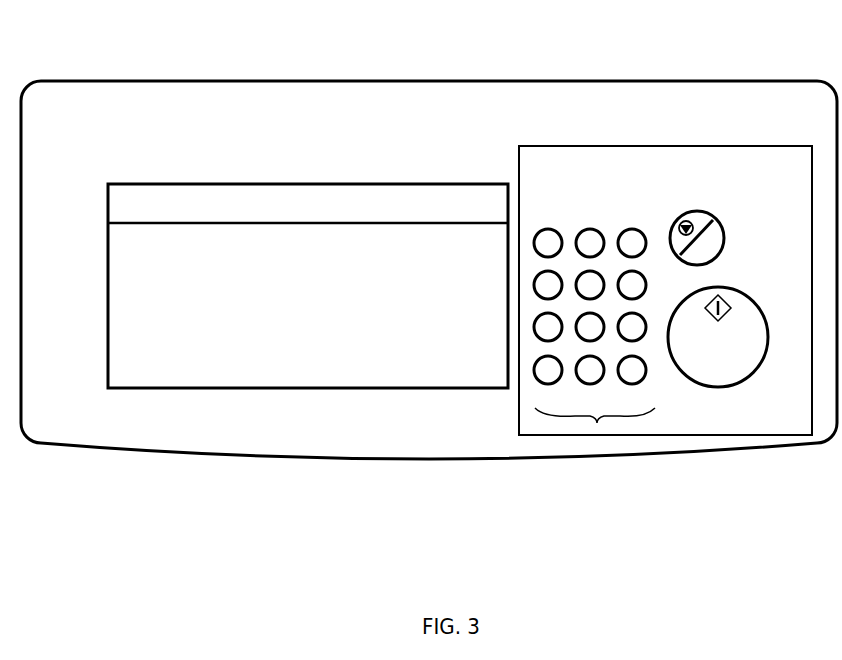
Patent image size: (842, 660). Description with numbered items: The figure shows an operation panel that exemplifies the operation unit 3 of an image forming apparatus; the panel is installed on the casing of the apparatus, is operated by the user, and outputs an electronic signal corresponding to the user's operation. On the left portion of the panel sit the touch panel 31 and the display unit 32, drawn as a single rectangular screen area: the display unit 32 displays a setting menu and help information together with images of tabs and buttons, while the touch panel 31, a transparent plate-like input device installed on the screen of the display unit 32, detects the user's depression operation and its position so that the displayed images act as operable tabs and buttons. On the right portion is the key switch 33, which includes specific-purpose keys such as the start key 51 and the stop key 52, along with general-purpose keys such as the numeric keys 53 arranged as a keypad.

The operation unit 3 is at (620, 82).
The touch panel 31 is at (308, 215).
The display unit 32 is at (438, 184).
The key switch 33 is at (757, 146).
The start key 51 is at (718, 387).
The stop key 52 is at (705, 211).
The numeric keys 53 is at (597, 423).